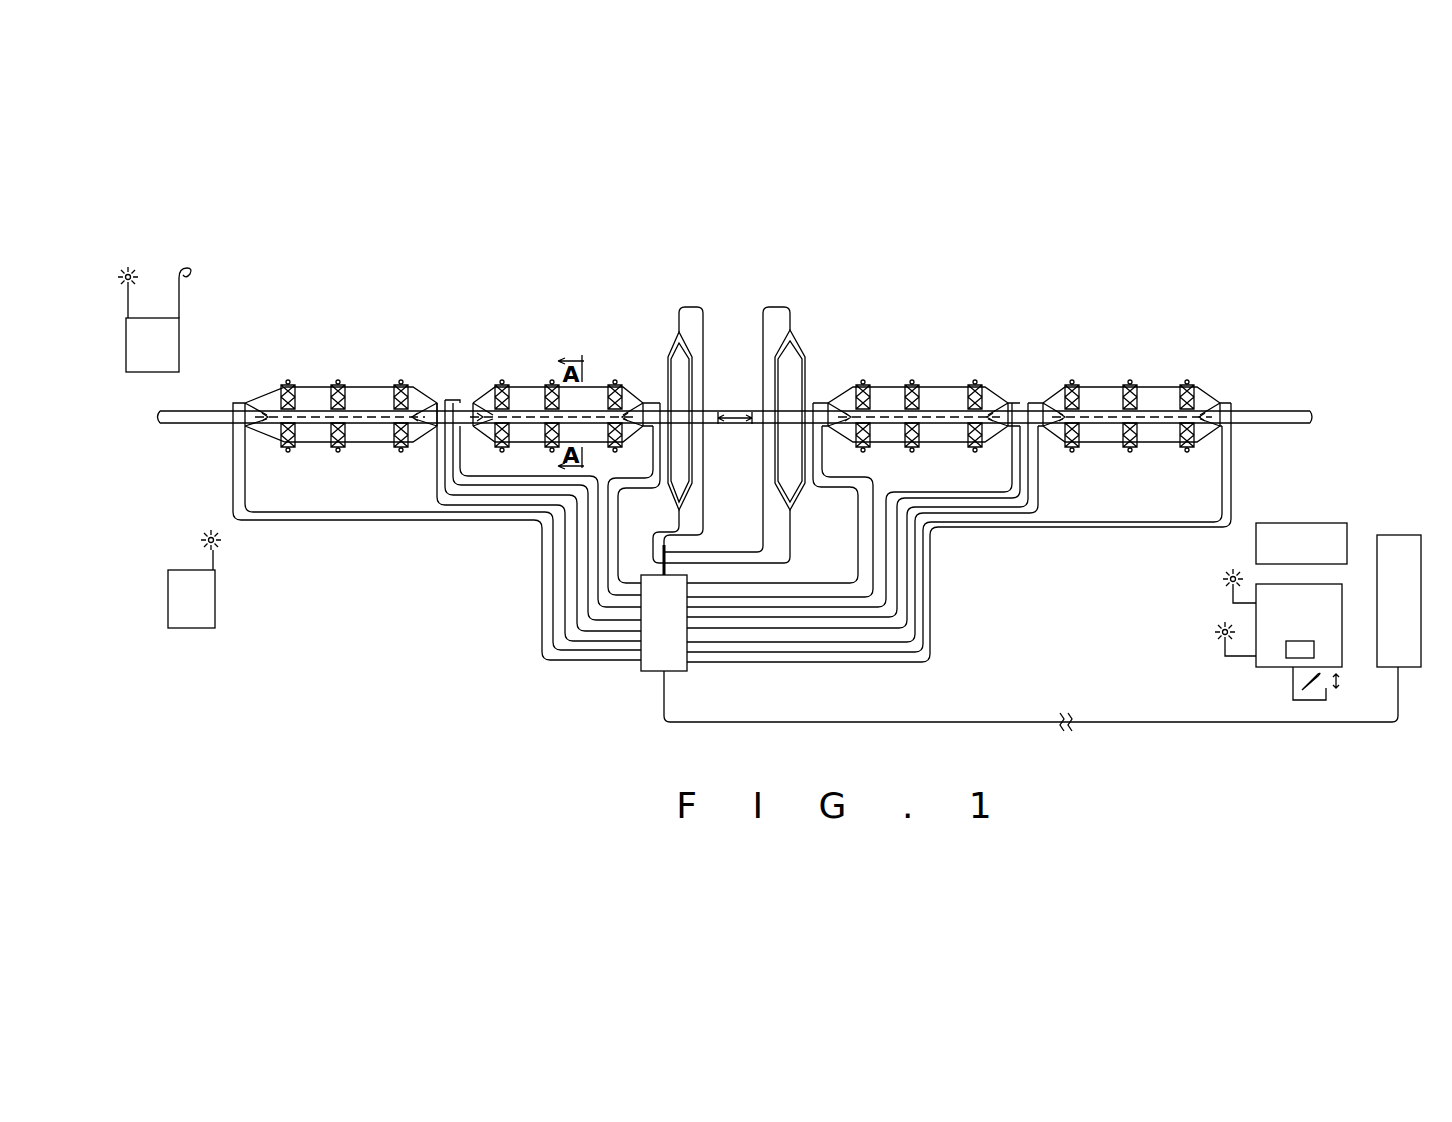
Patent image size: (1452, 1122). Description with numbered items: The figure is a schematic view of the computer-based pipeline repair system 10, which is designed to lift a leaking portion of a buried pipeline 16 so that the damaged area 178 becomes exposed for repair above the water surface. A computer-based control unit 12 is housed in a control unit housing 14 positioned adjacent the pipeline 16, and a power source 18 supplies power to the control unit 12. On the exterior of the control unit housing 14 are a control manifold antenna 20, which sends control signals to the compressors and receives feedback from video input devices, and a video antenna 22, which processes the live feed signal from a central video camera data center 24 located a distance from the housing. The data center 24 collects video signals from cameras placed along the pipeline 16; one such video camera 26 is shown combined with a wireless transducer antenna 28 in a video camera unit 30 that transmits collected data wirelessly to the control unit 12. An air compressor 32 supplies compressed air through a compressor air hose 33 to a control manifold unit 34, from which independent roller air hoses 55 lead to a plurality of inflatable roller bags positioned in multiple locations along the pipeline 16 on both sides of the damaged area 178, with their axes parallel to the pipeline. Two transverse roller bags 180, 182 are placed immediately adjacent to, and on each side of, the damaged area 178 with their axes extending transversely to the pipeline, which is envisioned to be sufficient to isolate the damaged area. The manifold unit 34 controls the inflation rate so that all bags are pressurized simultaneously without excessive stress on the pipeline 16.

The pipeline repair system 10 is at (952, 197).
The control unit 12 is at (1303, 650).
The control unit housing 14 is at (1315, 632).
The pipeline 16 is at (1248, 411).
The power source 18 is at (1300, 523).
The control manifold antenna 20 is at (1220, 633).
The video antenna 22 is at (1222, 580).
The central video camera data center 24 is at (218, 603).
The video camera 26 is at (183, 298).
The wireless transducer antenna 28 is at (133, 264).
The video camera unit 30 is at (181, 344).
The air compressor 32 is at (1398, 535).
The compressor air hose 33 is at (1400, 704).
The control manifold unit 34 is at (660, 668).
The roller air hose 55 is at (233, 475).
The damaged area 178 is at (733, 410).
The transverse roller bag 180 is at (669, 352).
The transverse roller bag 182 is at (800, 345).